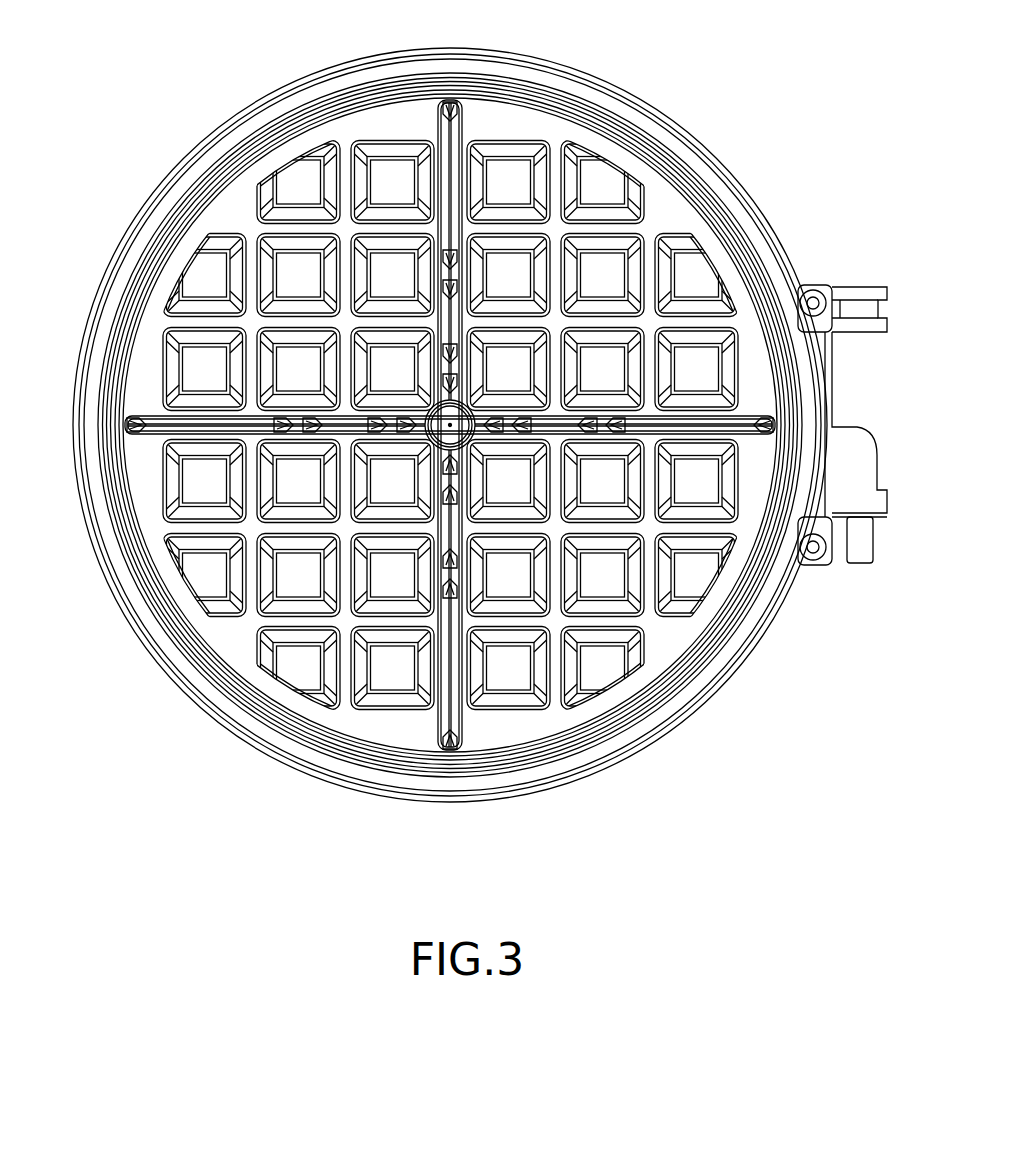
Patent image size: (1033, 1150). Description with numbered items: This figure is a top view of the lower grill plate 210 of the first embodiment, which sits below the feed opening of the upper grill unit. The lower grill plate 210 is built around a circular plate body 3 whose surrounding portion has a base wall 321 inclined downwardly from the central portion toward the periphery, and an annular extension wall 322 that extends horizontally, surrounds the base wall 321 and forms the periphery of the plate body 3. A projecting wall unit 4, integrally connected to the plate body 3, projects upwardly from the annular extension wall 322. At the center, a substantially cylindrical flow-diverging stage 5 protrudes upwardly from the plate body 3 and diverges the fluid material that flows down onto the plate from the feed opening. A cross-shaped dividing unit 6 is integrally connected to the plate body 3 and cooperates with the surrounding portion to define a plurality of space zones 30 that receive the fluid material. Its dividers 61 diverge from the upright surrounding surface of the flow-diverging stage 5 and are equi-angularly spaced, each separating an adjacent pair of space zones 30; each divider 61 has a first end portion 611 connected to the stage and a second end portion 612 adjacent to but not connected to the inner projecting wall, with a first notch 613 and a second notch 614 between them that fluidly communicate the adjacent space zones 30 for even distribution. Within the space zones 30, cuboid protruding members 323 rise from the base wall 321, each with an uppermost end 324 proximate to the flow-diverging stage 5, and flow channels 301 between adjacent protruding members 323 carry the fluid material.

The plate body 3 is at (651, 202).
The projecting wall unit 4 is at (743, 177).
The flow-diverging stage 5 is at (455, 432).
The dividing unit 6 is at (440, 434).
The space zones 30 is at (246, 222).
The dividers 61 is at (193, 425).
The lower grill plate 210 is at (717, 122).
The flow channels 301 is at (295, 528).
The base wall 321 is at (560, 712).
The annular extension wall 322 is at (742, 630).
The protruding members 323 is at (388, 578).
The uppermost end 324 is at (417, 650).
The first end portion 611 is at (423, 420).
The second end portion 612 is at (128, 432).
The first notch 613 is at (298, 415).
The second notch 614 is at (393, 415).